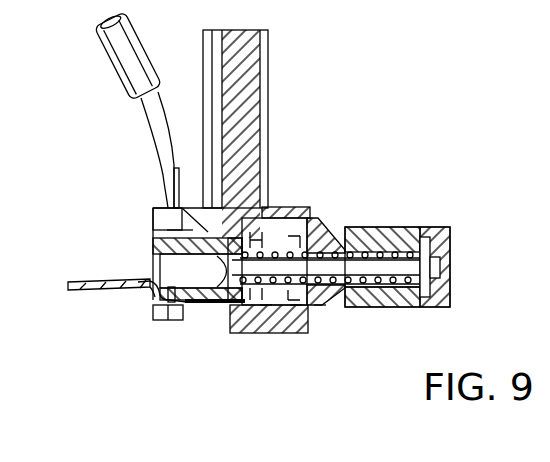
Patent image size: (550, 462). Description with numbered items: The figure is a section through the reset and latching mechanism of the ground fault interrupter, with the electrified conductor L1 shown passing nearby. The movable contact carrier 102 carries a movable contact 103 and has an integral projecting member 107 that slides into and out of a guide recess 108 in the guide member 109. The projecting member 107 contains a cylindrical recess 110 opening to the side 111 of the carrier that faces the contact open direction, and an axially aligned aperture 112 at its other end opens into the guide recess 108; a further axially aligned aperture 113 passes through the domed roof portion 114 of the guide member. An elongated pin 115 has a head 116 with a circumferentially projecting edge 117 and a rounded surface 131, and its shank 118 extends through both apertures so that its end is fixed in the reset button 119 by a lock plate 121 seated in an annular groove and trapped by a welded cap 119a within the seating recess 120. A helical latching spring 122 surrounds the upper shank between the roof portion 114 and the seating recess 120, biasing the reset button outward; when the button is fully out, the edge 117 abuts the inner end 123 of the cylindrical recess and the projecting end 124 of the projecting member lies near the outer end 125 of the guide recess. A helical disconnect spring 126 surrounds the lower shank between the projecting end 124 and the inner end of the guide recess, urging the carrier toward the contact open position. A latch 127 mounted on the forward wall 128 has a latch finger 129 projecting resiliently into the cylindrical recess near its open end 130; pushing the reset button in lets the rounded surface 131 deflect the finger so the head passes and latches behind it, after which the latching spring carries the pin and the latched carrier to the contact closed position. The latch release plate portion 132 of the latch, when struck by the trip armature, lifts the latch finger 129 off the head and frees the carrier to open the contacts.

The contact 103 is at (521, 19).
The electrified conductor L1 is at (150, 108).
The movable contact carrier 102 is at (165, 320).
The projecting member 107 is at (162, 213).
The guide recess 108 is at (290, 220).
The guide member 109 is at (297, 205).
The cylindrical recess 110 is at (213, 273).
The side of movable contact carrier 111 is at (163, 271).
The axially aligned aperture 112 is at (266, 307).
The axially aligned aperture 113 is at (362, 308).
The roof portion 114 is at (330, 226).
The elongated pin 115 is at (388, 308).
The head 116 is at (212, 306).
The circumferentially projecting edge 117 is at (270, 232).
The shank 118 is at (320, 308).
The reset button 119 is at (412, 222).
The cap 119a is at (450, 279).
The seating recess 120 is at (427, 300).
The lock plate 121 is at (455, 235).
The helical latching spring 122 is at (410, 310).
The inner end of cylindrical recess 123 is at (170, 200).
The projecting end 124 is at (234, 305).
The outer end of guide recess 125 is at (245, 240).
The helical disconnect spring 126 is at (296, 307).
The latch 127 is at (148, 303).
The forward wall 128 is at (192, 302).
The latch finger 129 is at (148, 306).
The open end 130 is at (150, 290).
The rounded surface 131 is at (155, 236).
The latch release plate portion 132 is at (78, 288).